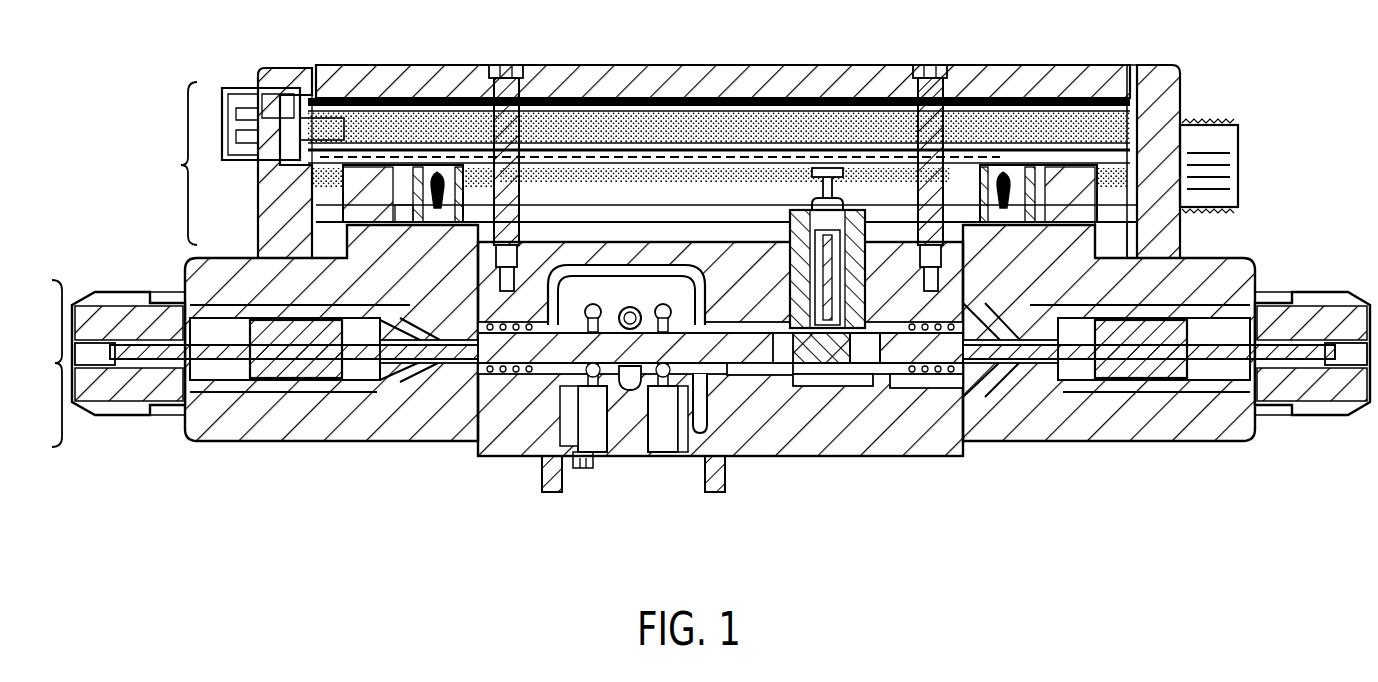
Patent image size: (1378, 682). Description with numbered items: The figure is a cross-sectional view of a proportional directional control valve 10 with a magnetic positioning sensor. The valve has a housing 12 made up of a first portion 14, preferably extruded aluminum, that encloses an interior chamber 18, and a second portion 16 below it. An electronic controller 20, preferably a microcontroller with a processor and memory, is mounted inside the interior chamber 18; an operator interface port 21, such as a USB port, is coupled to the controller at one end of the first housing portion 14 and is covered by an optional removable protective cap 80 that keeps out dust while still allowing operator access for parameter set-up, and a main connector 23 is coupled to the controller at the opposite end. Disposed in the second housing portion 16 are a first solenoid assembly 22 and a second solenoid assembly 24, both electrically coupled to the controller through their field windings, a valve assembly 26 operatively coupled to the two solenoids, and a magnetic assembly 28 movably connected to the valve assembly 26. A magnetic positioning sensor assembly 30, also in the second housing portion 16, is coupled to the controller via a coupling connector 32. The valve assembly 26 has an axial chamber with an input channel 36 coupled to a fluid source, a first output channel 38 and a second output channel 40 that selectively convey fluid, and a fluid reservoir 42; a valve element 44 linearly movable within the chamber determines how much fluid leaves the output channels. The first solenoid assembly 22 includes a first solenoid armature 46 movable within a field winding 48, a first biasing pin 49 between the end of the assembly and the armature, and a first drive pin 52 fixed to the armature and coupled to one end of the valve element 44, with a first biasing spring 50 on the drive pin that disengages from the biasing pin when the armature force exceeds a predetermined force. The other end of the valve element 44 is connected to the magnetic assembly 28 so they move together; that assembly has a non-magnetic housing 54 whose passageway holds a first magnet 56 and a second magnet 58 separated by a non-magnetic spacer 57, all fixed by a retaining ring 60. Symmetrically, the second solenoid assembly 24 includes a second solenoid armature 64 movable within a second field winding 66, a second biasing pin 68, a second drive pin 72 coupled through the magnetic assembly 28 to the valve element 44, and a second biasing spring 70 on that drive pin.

The proportional directional control valve 10 is at (1178, 551).
The housing 12 is at (1084, 72).
The first housing portion 14 is at (167, 163).
The second housing portion 16 is at (99, 363).
The interior chamber 18 is at (550, 195).
The electronic controller 20 is at (690, 156).
The operator interface port 21 is at (300, 92).
The first solenoid assembly 22 is at (194, 428).
The main connector 23 is at (1212, 150).
The second solenoid assembly 24 is at (1104, 440).
The valve assembly 26 is at (548, 457).
The magnetic assembly 28 is at (842, 440).
The magnetic positioning sensor assembly 30 is at (788, 300).
The coupling connector 32 is at (840, 198).
The input channel 36 is at (628, 305).
The first output channel 38 is at (603, 430).
The second output channel 40 is at (672, 440).
The fluid reservoir 42 is at (530, 445).
The valve element 44 is at (562, 310).
The first solenoid armature 46 is at (304, 370).
The field winding 48 is at (238, 384).
The first biasing pin 49 is at (140, 357).
The first biasing spring 50 is at (498, 392).
The first drive pin 52 is at (394, 362).
The non-magnetic housing 54 is at (876, 397).
The first magnet 56 is at (790, 440).
The non-magnetic spacer 57 is at (822, 386).
The second magnet 58 is at (848, 386).
The retaining ring 60 is at (716, 300).
The second solenoid armature 64 is at (1145, 370).
The second field winding 66 is at (1230, 383).
The second biasing pin 68 is at (1288, 395).
The second biasing spring 70 is at (930, 402).
The second drive pin 72 is at (1045, 372).
The removable protective cap 80 is at (234, 86).